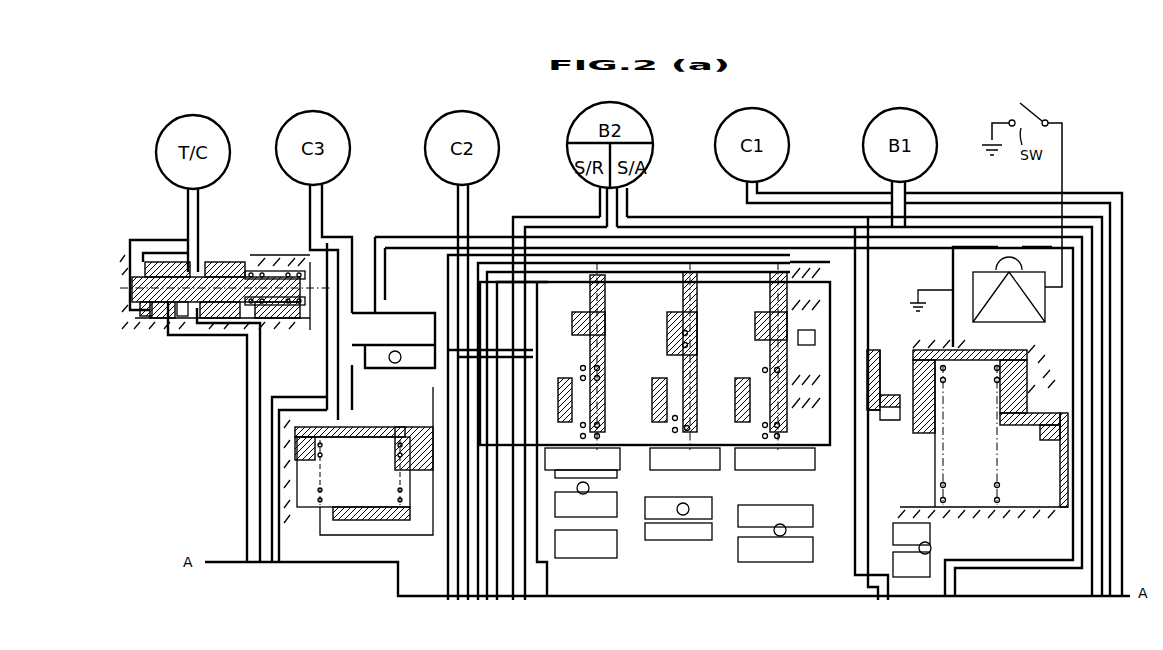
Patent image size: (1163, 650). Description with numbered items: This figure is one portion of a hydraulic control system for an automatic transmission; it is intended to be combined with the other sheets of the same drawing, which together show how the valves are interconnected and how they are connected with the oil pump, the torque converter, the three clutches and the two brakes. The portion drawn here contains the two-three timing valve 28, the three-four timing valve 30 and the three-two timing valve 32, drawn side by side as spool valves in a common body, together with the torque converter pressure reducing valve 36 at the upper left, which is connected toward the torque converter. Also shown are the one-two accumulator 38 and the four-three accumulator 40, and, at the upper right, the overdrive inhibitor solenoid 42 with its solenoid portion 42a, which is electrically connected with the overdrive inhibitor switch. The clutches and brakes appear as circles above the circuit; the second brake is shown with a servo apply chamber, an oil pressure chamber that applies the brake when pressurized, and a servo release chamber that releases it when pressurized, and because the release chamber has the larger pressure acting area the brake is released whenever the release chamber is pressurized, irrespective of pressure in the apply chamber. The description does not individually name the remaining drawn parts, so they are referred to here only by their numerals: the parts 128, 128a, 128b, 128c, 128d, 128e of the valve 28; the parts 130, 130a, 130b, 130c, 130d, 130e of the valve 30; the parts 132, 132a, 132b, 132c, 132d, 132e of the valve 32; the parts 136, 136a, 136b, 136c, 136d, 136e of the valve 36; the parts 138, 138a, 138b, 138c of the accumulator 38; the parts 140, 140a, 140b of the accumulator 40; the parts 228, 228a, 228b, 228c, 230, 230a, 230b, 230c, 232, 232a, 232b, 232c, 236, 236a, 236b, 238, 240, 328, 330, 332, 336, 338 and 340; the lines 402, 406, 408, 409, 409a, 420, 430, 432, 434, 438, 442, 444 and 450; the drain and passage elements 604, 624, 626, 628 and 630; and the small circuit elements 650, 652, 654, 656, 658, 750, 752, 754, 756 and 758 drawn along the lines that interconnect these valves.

The 2-3 timing valve 28 is at (823, 372).
The 3-4 timing valve 30 is at (702, 346).
The 3-2 timing valve 32 is at (571, 334).
The torque converter pressure reducing valve 36 is at (214, 285).
The 1-2 accumulator 38 is at (968, 434).
The 4-3 accumulator 40 is at (310, 385).
The overdrive inhibitor solenoid 42 is at (987, 297).
The solenoid 42a is at (1020, 264).
The spool of valve 28 128 is at (778, 432).
The port 128a is at (805, 272).
The port 128b is at (805, 308).
The port 128c is at (815, 340).
The port 128d is at (805, 378).
The port 128e is at (795, 415).
The spool of valve 30 130 is at (688, 365).
The port 130a is at (708, 275).
The port 130b is at (705, 312).
The port 130c is at (705, 318).
The port 130d is at (708, 350).
The port 130e is at (705, 425).
The spool of valve 32 132 is at (590, 412).
The port 132a is at (606, 318).
The port 132b is at (585, 312).
The port 132c is at (580, 350).
The port 132d is at (615, 372).
The port 132e is at (683, 510).
The spool of manual valve 136 is at (290, 276).
The land 136a is at (135, 318).
The land 136b is at (152, 318).
The port 136c is at (190, 318).
The land 136d is at (218, 310).
The land 136e is at (298, 310).
The spool of valve 38 138 is at (1025, 400).
The land 138a is at (976, 507).
The land 138b is at (968, 350).
The land 138c is at (1005, 425).
The piston of accumulator 140 is at (358, 471).
The chamber 140a is at (360, 427).
The chamber 140b is at (358, 520).
The spring chamber 228 is at (775, 424).
The port 228a is at (830, 303).
The port 228b is at (830, 330).
The port 228c is at (830, 398).
The oil passage 230 is at (685, 272).
The port 230a is at (683, 272).
The port 230b is at (640, 334).
The port 230c is at (682, 465).
The oil passage 232 is at (590, 265).
The port 232a is at (582, 300).
The port 232b is at (580, 328).
The spring chamber 232c is at (582, 455).
The spring 236 is at (262, 260).
The land 236a is at (157, 262).
The land 236b is at (228, 262).
The spring chamber 238 is at (908, 445).
The spring 240 is at (392, 462).
The spring 328 is at (790, 360).
The spring 330 is at (685, 424).
The spring 332 is at (575, 398).
The spring 336 is at (272, 308).
The spring 338 is at (998, 466).
The spring 340 is at (390, 478).
The oil passage 402 is at (302, 392).
The oil passage 406 is at (245, 378).
The oil passage 408 is at (838, 192).
The oil passage 409 is at (1087, 225).
The oil passage 409a is at (1008, 248).
The oil passage 420 is at (520, 578).
The oil passage 430 is at (505, 316).
The oil passage 432 is at (866, 588).
The oil passage 434 is at (468, 205).
The oil passage 438 is at (905, 190).
The oil passage 442 is at (325, 225).
The oil passage 444 is at (600, 198).
The oil passage 450 is at (198, 212).
The drain 604 is at (973, 240).
The drain port 624 is at (130, 268).
The drain port 626 is at (760, 190).
The drain port 628 is at (322, 207).
The drain port 630 is at (627, 193).
The check valve 650 is at (775, 549).
The check valve 652 is at (678, 518).
The orifice 654 is at (572, 560).
The orifice 656 is at (888, 548).
The check valve 658 is at (400, 312).
The orifice 750 is at (780, 522).
The orifice 752 is at (695, 508).
The orifice 754 is at (580, 500).
The orifice 756 is at (933, 550).
The orifice 758 is at (400, 364).